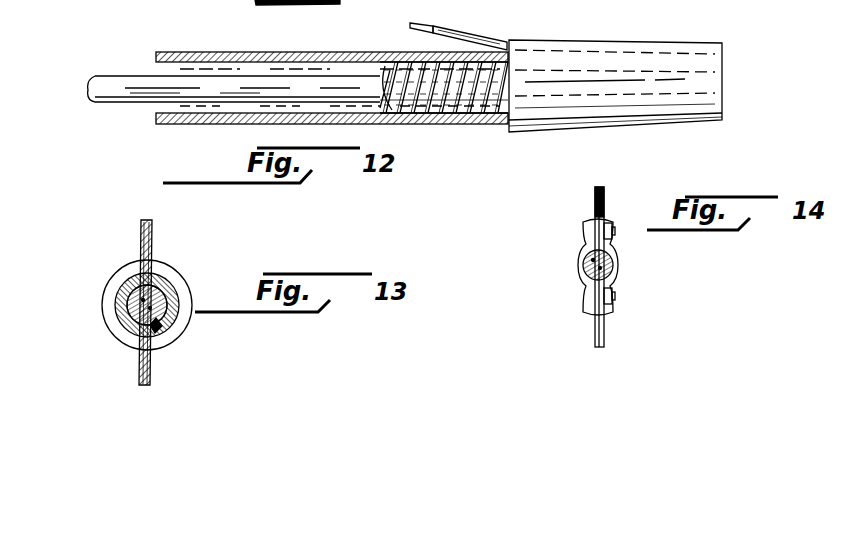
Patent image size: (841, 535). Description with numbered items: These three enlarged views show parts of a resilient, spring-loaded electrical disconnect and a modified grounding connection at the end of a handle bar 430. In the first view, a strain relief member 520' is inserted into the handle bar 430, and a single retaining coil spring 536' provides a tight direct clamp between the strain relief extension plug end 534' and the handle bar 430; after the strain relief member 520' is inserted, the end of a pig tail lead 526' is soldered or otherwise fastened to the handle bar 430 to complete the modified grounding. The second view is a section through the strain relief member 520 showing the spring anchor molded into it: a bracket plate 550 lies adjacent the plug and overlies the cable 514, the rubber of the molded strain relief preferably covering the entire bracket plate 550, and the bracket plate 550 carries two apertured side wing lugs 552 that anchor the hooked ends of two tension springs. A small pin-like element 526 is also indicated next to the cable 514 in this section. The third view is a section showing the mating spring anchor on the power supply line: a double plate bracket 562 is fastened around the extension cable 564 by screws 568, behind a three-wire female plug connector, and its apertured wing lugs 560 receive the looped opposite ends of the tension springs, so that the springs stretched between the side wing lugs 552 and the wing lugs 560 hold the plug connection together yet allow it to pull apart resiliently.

In FIG. 12, the handle bar 430 is at (301, 52).
In FIG. 12, the cable 514 is at (122, 100).
In FIG. 13, the cable 514 is at (172, 292).
In FIG. 12, the retaining coil spring 536' is at (438, 71).
In FIG. 12, the strain relief extension plug end 534' is at (444, 122).
In FIG. 12, the pig tail lead 526' is at (461, 29).
In FIG. 12, the strain relief member 520' is at (615, 71).
In FIG. 13, the bracket plate 550 is at (158, 252).
In FIG. 13, the strain relief member 520 is at (173, 288).
In FIG. 13, the side wing lugs 552 is at (153, 228).
In FIG. 13, the pin 526 is at (181, 337).
In FIG. 14, the wing lugs 560 is at (604, 190).
In FIG. 14, the screws 568 is at (583, 298).
In FIG. 14, the extension cable 564 is at (613, 268).
In FIG. 14, the double plate bracket 562 is at (612, 238).